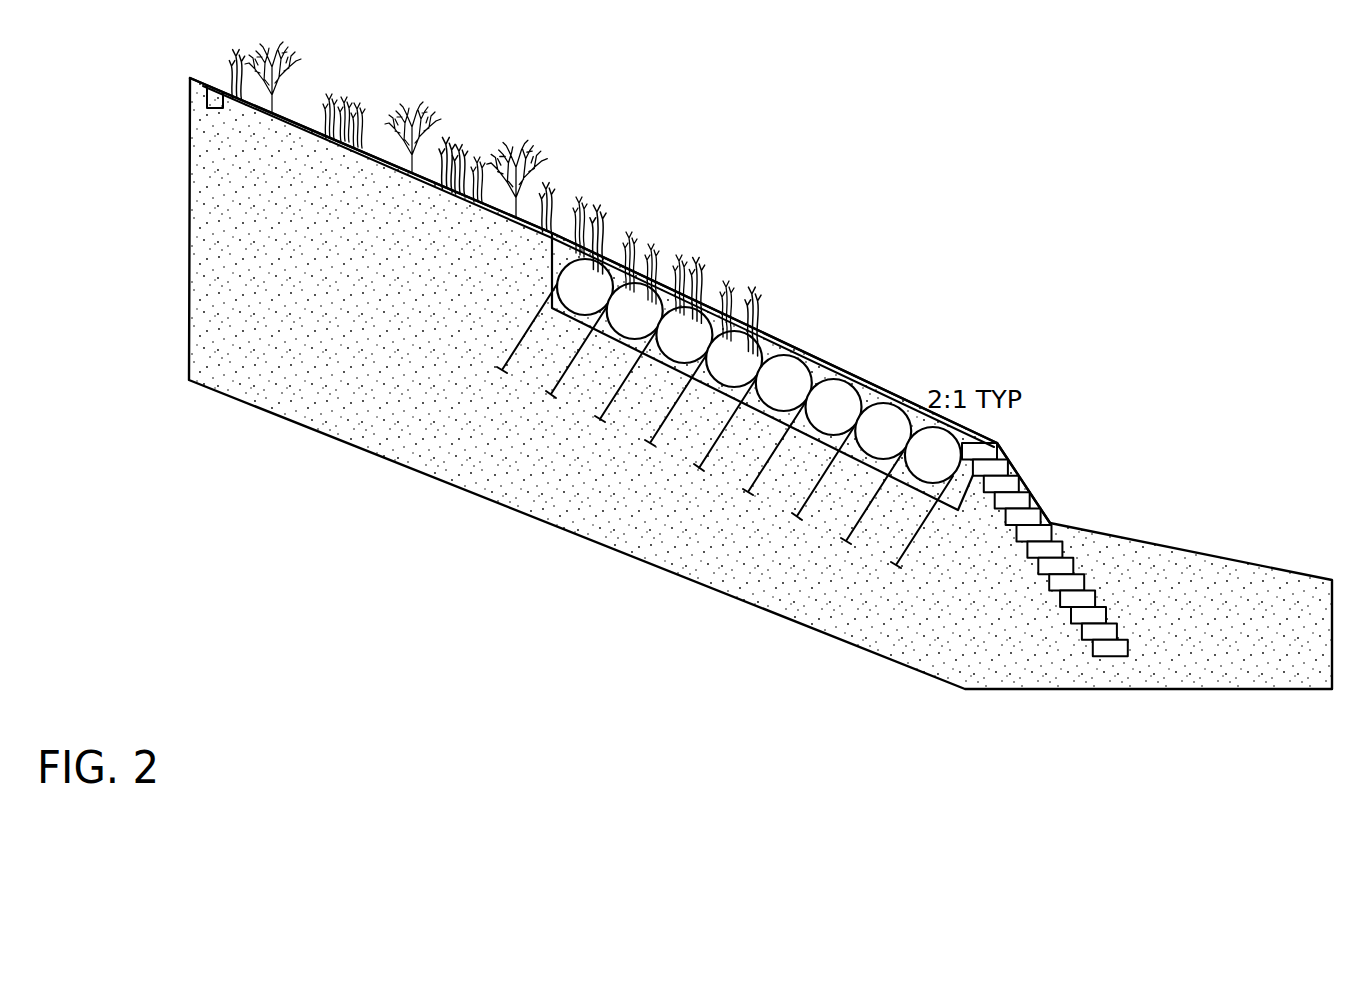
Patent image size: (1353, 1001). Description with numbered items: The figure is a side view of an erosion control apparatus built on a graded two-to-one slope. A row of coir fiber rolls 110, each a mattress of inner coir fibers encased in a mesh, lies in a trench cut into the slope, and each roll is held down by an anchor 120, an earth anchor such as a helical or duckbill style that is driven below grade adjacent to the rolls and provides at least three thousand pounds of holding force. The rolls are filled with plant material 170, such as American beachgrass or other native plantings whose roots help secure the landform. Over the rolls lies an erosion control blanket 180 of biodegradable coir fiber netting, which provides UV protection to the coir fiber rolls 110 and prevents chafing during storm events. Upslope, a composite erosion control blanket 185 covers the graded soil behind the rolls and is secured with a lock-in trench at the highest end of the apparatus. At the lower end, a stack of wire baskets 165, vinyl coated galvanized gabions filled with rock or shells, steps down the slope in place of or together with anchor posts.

The composite erosion control blanket 185 is at (296, 122).
The plant material 170 is at (652, 270).
The coir fiber roll 110 is at (738, 338).
The anchor 120 is at (725, 428).
The erosion control blanket 180 is at (874, 389).
The wire basket 165 is at (987, 451).